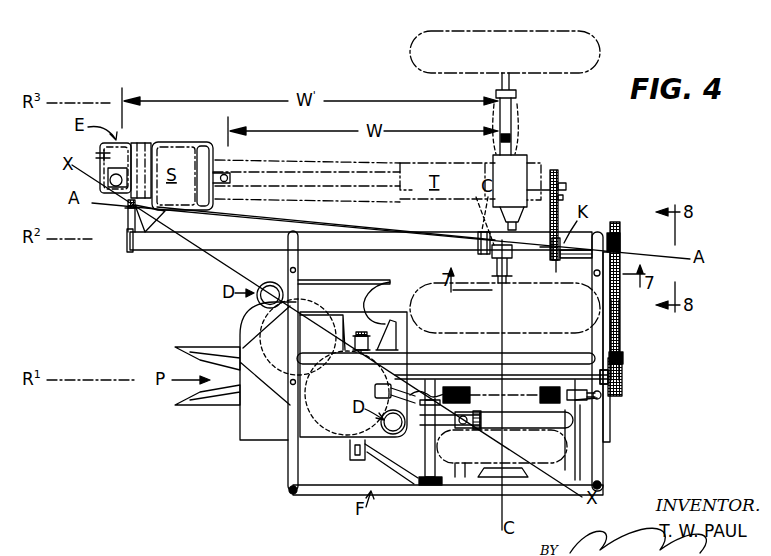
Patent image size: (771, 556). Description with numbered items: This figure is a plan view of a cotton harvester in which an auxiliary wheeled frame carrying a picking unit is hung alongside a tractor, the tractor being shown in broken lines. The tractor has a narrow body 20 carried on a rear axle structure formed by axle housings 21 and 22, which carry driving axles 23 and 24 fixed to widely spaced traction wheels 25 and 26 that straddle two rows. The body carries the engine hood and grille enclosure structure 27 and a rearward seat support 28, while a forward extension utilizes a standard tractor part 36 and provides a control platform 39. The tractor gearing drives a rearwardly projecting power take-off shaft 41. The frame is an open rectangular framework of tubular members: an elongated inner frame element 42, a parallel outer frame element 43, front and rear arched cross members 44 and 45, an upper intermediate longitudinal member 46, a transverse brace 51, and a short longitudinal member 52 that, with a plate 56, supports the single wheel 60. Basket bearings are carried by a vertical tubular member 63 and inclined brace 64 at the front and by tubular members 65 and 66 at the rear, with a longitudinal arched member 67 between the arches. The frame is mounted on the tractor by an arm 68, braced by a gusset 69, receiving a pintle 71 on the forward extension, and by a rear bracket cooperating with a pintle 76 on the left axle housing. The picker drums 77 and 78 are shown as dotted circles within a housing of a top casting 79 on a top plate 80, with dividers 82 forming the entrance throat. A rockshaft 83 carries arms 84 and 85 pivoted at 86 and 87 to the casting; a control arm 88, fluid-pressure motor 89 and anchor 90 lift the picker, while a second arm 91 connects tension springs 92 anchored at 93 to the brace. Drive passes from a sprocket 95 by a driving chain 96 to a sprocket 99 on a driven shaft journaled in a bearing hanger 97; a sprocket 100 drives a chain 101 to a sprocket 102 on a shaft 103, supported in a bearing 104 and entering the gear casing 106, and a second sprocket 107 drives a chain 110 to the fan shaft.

The tractor body 20 is at (401, 162).
The axle housing 21 is at (518, 112).
The axle housing 22 is at (512, 256).
The driving axle 23 is at (516, 93).
The driving axle 24 is at (505, 284).
The traction wheel 25 is at (580, 32).
The traction wheel 26 is at (444, 326).
The engine hood and grille enclosure structure 27 is at (271, 161).
The seat support 28 is at (527, 165).
The standard tractor part 36 is at (108, 175).
The platform 39 is at (143, 145).
The power take-off shaft 41 is at (566, 186).
The inner frame element 42 is at (156, 250).
The outer frame element 43 is at (337, 493).
The front arched cross member 44 is at (287, 453).
The rear arched cross member 45 is at (604, 449).
The intermediate longitudinal member 46 is at (509, 353).
The transverse brace 51 is at (578, 441).
The short longitudinal member 52 is at (603, 425).
The plate 56 is at (495, 479).
The single wheel 60 is at (460, 468).
The vertical tubular member 63 is at (290, 492).
The inclined tubular brace 64 is at (281, 420).
The tubular member 65 is at (605, 483).
The tubular member 66 is at (602, 396).
The longitudinal arched member 67 is at (291, 270).
The arm 68 is at (128, 225).
The gusset 69 is at (150, 222).
The pintle 71 is at (127, 208).
The pintle 76 is at (479, 233).
The picker drum 77 is at (322, 315).
The picker drum 78 is at (337, 431).
The top casting 79 is at (360, 315).
The top plate 80 is at (363, 285).
The dividers 82 is at (203, 352).
The rockshaft 83 is at (431, 486).
The arm 84 is at (385, 352).
The arm 85 is at (397, 470).
The pivotal connection 86 is at (368, 340).
The pivotal connection 87 is at (350, 456).
The control arm 88 is at (441, 428).
The fluid-pressure motor 89 is at (467, 430).
The anchor 90 is at (506, 430).
The second arm 91 is at (412, 395).
The tension springs 92 is at (462, 387).
The anchor 93 is at (608, 408).
The sprocket 95 is at (558, 172).
The driving chain 96 is at (563, 197).
The bearing hanger 97 is at (595, 271).
The sprocket 99 is at (556, 262).
The sprocket 100 is at (612, 228).
The chain 101 is at (621, 316).
The sprocket 102 is at (612, 379).
The shaft 103 is at (535, 375).
The bearing 104 is at (603, 372).
The gear casing 106 is at (375, 388).
The second sprocket 107 is at (623, 369).
The chain 110 is at (622, 366).